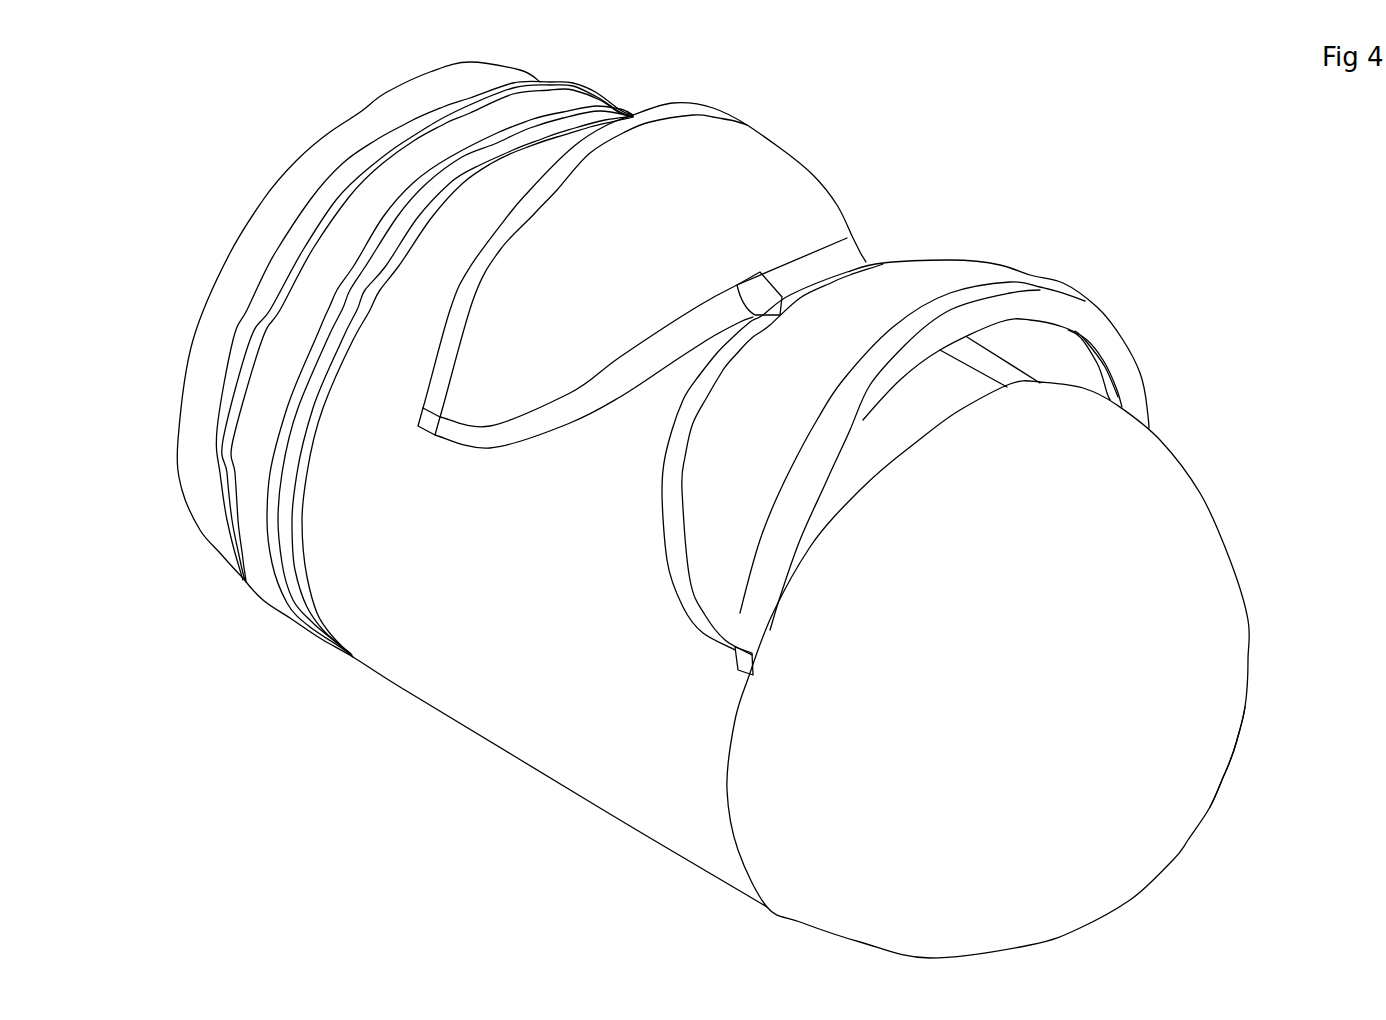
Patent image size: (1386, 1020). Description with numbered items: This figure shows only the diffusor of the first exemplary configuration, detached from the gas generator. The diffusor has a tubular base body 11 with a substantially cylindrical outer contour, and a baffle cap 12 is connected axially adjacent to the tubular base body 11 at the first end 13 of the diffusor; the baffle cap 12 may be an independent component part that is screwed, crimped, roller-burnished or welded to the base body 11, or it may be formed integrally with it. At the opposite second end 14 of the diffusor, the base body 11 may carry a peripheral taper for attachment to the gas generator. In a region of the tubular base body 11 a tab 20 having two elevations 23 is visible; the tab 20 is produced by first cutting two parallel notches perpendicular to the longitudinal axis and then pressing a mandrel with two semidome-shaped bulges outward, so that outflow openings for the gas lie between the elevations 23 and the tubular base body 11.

The tubular base body 11 is at (503, 736).
The baffle cap 12 is at (1206, 543).
The first end 13 is at (1243, 788).
The second end 14 is at (221, 238).
The tab 20 is at (893, 242).
The elevations 23 is at (783, 160).